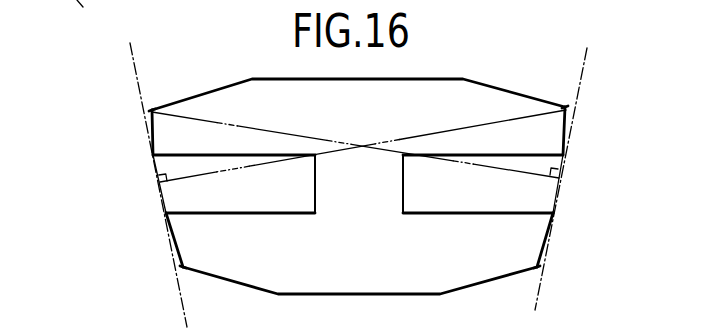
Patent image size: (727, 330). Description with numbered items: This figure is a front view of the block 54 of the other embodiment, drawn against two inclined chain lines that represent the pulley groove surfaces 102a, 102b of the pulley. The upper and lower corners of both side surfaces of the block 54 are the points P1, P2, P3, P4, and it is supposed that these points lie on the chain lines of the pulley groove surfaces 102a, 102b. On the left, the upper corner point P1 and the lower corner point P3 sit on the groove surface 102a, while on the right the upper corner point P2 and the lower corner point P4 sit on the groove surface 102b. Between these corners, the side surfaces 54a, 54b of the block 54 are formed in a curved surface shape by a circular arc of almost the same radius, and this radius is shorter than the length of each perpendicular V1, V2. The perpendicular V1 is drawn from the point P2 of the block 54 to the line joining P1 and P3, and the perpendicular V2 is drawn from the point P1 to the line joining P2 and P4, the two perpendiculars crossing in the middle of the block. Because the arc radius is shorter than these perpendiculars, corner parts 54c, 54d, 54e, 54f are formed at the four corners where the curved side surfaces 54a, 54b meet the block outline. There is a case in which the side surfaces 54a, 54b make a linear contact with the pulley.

The block 54 is at (443, 78).
The side surface 54a is at (153, 146).
The side surface 54b is at (553, 223).
The corner part 54c is at (152, 112).
The corner part 54d is at (566, 115).
The corner part 54e is at (175, 254).
The corner part 54f is at (543, 253).
The point P1 is at (150, 110).
The point P2 is at (567, 107).
The point P3 is at (183, 267).
The point P4 is at (538, 266).
The perpendicular V1 is at (405, 136).
The perpendicular V2 is at (283, 132).
The pulley groove surface 102a is at (189, 297).
The pulley groove surface 102b is at (533, 297).